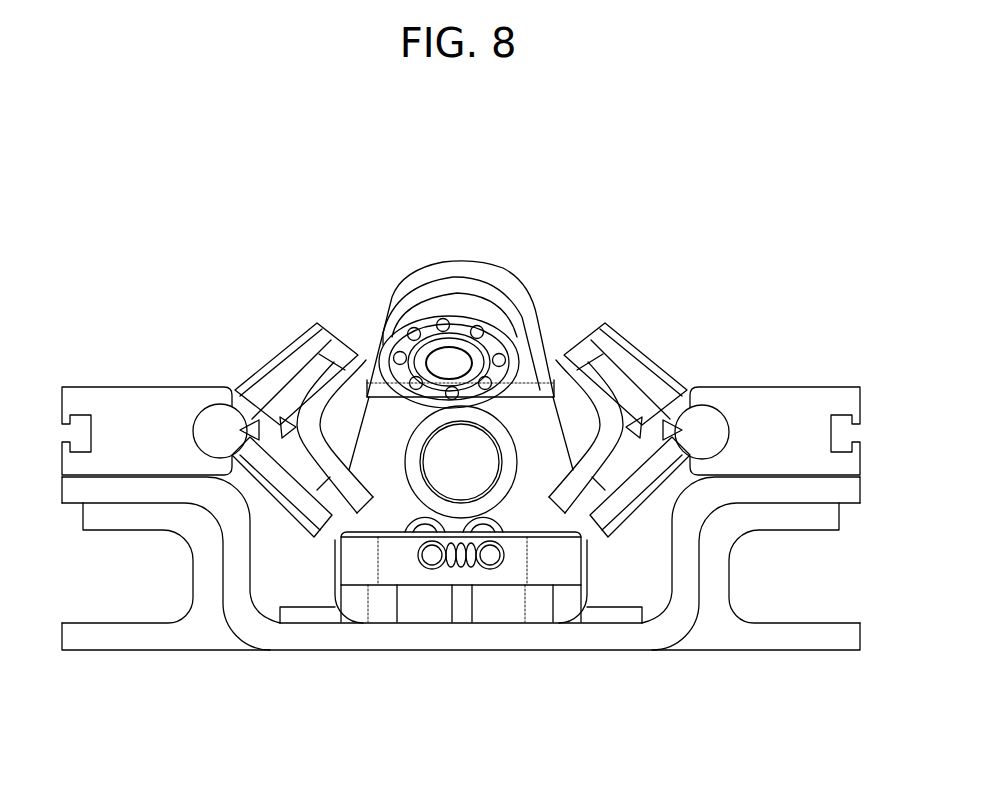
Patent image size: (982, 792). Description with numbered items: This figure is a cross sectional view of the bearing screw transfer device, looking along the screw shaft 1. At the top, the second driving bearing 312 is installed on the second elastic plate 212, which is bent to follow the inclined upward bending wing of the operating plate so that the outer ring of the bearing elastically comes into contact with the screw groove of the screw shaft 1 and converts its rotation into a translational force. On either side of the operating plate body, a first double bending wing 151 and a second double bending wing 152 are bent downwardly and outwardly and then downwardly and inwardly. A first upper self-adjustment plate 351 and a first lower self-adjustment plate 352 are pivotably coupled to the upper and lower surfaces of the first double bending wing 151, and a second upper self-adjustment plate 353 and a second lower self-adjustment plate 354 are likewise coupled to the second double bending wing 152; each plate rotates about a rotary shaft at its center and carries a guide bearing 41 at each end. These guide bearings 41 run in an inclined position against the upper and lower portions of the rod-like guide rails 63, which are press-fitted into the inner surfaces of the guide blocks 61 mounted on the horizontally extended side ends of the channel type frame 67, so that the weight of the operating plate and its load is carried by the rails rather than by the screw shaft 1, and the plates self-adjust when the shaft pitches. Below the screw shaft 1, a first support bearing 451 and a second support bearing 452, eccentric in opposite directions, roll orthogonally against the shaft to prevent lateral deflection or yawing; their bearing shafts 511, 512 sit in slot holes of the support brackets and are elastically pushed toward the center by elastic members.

The screw shaft 1 is at (507, 460).
The guide bearing 41 is at (275, 378).
The guide block 61 is at (125, 403).
The guide rail 63 is at (215, 415).
The channel type frame 67 is at (480, 640).
The first double bending wing 151 is at (330, 388).
The second double bending wing 152 is at (594, 372).
The second elastic plate 212 is at (493, 282).
The second driving bearing 312 is at (427, 302).
The first upper self-adjustment plate 351 is at (345, 352).
The first lower self-adjustment plate 352 is at (333, 503).
The second upper self-adjustment plate 353 is at (578, 340).
The second lower self-adjustment plate 354 is at (589, 503).
The first support bearing 451 is at (412, 522).
The second support bearing 452 is at (512, 523).
The bearing shaft 511 is at (432, 565).
The bearing shaft 512 is at (490, 565).